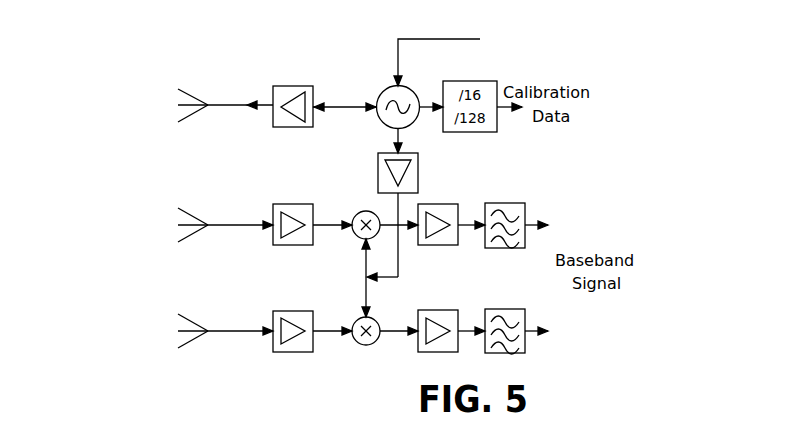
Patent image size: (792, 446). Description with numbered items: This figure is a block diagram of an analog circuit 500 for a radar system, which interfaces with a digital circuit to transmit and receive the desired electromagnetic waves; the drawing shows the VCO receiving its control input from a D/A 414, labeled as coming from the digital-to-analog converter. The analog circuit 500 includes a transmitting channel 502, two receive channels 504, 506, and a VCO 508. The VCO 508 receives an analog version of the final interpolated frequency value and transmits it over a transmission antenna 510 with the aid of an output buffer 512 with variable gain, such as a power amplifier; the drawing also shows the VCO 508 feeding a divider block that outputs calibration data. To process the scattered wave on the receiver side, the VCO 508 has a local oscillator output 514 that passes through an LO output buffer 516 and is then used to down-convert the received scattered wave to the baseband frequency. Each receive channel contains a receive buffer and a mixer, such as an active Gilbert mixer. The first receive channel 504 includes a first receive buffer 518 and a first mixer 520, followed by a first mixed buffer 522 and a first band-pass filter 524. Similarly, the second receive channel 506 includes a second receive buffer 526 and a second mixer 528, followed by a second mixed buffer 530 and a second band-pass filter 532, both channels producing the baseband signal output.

The analog circuit 500 is at (732, 69).
The digital-to-analog converter 414 is at (493, 57).
The transmitting channel 502 is at (141, 101).
The first receive channel 504 is at (141, 208).
The second receive channel 506 is at (141, 319).
The VCO 508 is at (405, 87).
The transmission antenna 510 is at (195, 93).
The output buffer 512 is at (294, 86).
The local oscillator output 514 is at (396, 135).
The LO output buffer 516 is at (418, 171).
The first receive buffer 518 is at (297, 204).
The first mixer 520 is at (360, 212).
The first mixed buffer 522 is at (440, 204).
The first band-pass filter 524 is at (505, 203).
The second receive buffer 526 is at (297, 311).
The second mixer 528 is at (372, 318).
The second mixed buffer 530 is at (440, 310).
The second band-pass filter 532 is at (505, 309).